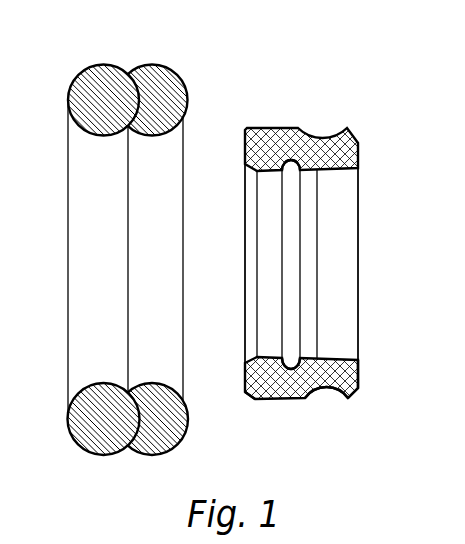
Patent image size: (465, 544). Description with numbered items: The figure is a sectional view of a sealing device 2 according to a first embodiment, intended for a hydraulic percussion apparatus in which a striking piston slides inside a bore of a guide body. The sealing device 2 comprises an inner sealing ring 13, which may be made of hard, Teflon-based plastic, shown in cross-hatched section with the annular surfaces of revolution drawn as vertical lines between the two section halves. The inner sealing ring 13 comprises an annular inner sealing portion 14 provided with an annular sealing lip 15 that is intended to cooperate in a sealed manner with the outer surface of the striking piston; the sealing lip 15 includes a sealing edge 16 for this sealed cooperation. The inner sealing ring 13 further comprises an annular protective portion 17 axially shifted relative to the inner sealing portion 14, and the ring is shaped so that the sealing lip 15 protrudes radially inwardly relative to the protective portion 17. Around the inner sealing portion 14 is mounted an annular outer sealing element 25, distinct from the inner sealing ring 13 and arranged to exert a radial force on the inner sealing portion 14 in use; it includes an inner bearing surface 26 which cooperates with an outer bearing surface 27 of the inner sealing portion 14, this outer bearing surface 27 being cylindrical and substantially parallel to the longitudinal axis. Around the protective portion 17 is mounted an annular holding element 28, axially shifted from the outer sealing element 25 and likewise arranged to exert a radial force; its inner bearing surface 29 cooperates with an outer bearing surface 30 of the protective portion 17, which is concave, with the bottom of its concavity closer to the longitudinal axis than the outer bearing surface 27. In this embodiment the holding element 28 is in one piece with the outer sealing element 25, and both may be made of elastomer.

The sealing device 2 is at (263, 113).
The inner sealing ring 13 is at (372, 180).
The inner sealing portion 14 is at (245, 380).
The sealing lip 15 is at (270, 172).
The sealing edge 16 is at (285, 355).
The protective portion 17 is at (358, 373).
The outer sealing element 25 is at (86, 69).
The inner bearing surface 26 is at (100, 382).
The outer bearing surface 27 is at (262, 402).
The holding element 28 is at (172, 75).
The inner bearing surface 29 is at (148, 380).
The outer bearing surface 30 is at (322, 392).